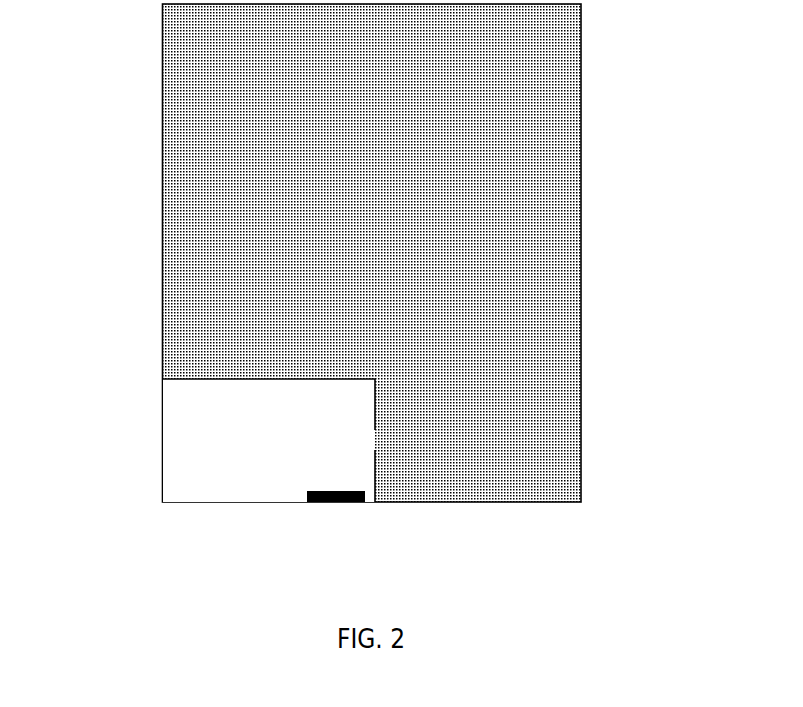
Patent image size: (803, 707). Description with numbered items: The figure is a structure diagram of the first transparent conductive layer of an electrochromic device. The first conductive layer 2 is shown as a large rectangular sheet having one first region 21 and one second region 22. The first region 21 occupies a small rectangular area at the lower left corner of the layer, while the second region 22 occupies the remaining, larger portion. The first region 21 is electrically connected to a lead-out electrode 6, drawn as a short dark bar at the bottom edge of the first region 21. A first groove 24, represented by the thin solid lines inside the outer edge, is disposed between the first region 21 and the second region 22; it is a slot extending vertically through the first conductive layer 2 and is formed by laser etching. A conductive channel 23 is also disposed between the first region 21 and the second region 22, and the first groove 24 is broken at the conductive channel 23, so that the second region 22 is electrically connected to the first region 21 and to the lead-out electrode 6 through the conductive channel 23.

The first conductive layer 2 is at (335, 253).
The second region 22 is at (515, 207).
The first region 21 is at (187, 460).
The conductive channel 23 is at (377, 442).
The first groove 24 is at (374, 409).
The lead-out electrode 6 is at (333, 502).